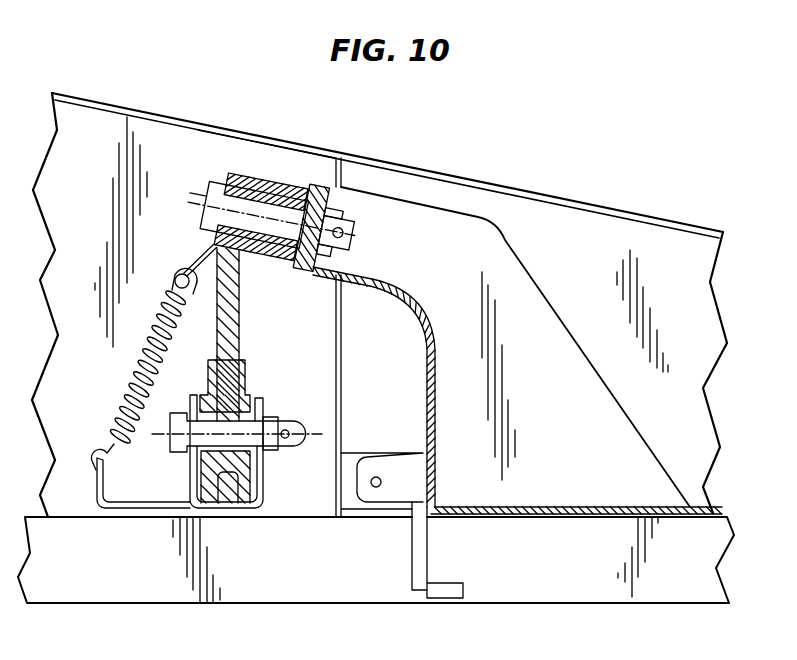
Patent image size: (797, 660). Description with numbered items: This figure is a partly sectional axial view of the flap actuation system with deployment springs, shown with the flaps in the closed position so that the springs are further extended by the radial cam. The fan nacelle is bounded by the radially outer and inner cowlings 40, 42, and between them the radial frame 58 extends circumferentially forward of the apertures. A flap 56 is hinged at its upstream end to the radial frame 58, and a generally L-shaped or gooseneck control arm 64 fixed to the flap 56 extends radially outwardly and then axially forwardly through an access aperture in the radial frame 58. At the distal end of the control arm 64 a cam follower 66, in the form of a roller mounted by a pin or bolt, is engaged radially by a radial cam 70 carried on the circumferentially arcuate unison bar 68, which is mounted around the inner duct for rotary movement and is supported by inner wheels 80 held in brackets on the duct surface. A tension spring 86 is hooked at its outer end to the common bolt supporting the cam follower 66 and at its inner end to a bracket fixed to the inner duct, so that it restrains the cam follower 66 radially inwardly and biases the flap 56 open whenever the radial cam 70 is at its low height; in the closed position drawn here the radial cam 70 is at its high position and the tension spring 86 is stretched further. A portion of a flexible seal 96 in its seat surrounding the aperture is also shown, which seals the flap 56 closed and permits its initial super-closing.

The radially outer cowling 40 is at (147, 113).
The radially inner cowling 42 is at (186, 604).
The flap 56 is at (600, 606).
The radial frame 58 is at (343, 395).
The control arm 64 is at (556, 402).
The cam follower 66 is at (228, 173).
The unison bar 68 is at (241, 332).
The radial cam 70 is at (250, 255).
The inner wheel 80 is at (244, 383).
The tension spring 86 is at (133, 385).
The flexible seal 96 is at (445, 588).